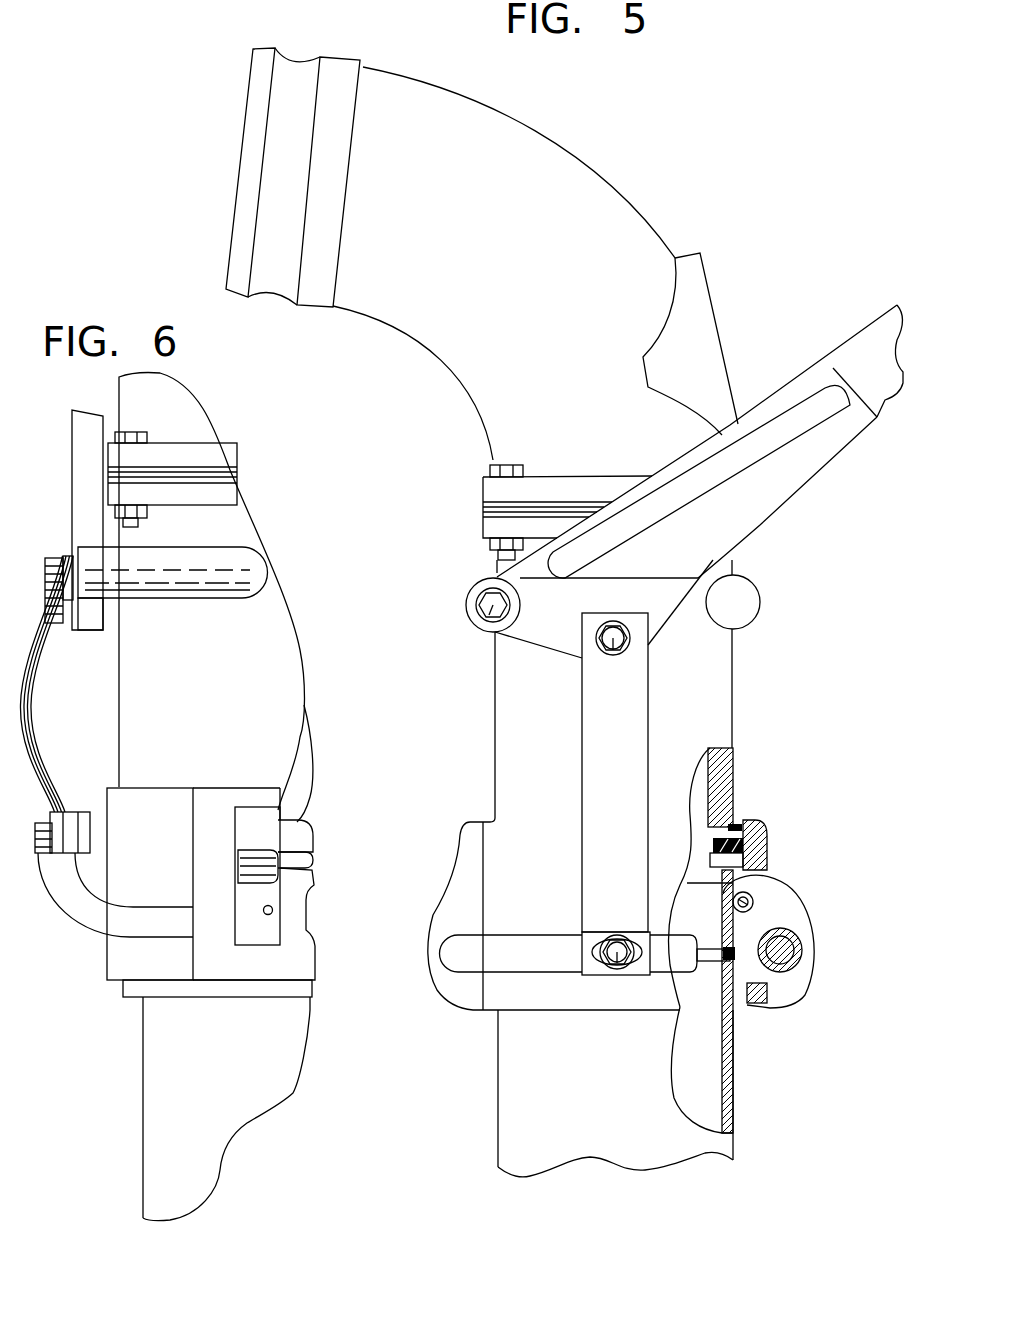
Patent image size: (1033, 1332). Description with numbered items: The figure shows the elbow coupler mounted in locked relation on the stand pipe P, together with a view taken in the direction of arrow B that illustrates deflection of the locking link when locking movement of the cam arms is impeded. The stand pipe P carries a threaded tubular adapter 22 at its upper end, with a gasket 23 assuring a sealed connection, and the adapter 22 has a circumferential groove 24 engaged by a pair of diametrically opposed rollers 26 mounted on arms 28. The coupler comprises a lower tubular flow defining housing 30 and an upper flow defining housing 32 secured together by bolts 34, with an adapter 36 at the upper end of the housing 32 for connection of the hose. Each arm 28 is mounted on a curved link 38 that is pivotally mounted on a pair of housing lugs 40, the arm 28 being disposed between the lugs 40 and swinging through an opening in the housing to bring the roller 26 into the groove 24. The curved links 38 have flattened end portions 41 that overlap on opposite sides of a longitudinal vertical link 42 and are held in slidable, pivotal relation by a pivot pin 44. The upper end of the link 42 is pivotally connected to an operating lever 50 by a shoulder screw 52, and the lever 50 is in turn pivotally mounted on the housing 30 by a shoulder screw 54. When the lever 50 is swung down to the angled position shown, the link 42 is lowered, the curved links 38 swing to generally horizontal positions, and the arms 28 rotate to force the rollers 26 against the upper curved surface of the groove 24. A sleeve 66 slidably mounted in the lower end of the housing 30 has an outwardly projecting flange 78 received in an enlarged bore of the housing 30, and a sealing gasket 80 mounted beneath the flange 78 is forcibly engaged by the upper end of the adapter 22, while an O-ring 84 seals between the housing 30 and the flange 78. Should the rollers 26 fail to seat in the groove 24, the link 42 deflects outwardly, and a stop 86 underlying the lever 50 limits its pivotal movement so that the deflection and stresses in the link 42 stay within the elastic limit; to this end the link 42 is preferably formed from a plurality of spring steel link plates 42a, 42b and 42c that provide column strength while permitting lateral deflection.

In FIG. 5, the adapter 36 is at (345, 63).
In FIG. 5, the upper flow defining housing 32 is at (632, 205).
In FIG. 5, the bolts 34 is at (520, 467).
In FIG. 6, the bolts 34 is at (162, 441).
In FIG. 5, the operating lever 50 is at (857, 337).
In FIG. 6, the operating lever 50 is at (103, 417).
In FIG. 5, the shoulder screw 54 is at (480, 627).
In FIG. 6, the shoulder screw 54 is at (60, 541).
In FIG. 5, the shoulder screw 52 is at (603, 654).
In FIG. 6, the shoulder screw 52 is at (47, 557).
In FIG. 5, the link 42 is at (627, 692).
In FIG. 6, the link 42 is at (84, 652).
In FIG. 6, the link plate 42a is at (53, 666).
In FIG. 6, the link plate 42b is at (33, 707).
In FIG. 6, the link plate 42c is at (39, 740).
In FIG. 5, the stop 86 is at (760, 596).
In FIG. 6, the stop 86 is at (167, 547).
In FIG. 5, the lower flow defining housing 30 is at (727, 753).
In FIG. 6, the lower flow defining housing 30 is at (247, 663).
In FIG. 5, the O-ring 84 is at (742, 823).
In FIG. 5, the flange 78 is at (767, 838).
In FIG. 6, the flange 78 is at (290, 824).
In FIG. 5, the sealing gasket 80 is at (713, 845).
In FIG. 6, the sealing gasket 80 is at (309, 842).
In FIG. 5, the rollers 26 is at (755, 894).
In FIG. 6, the rollers 26 is at (272, 867).
In FIG. 5, the arms 28 is at (787, 913).
In FIG. 6, the arms 28 is at (250, 888).
In FIG. 5, the housing lugs 40 is at (810, 940).
In FIG. 6, the housing lugs 40 is at (193, 840).
In FIG. 5, the flattened end portions 41 is at (583, 932).
In FIG. 6, the flattened end portions 41 is at (64, 808).
In FIG. 5, the pivot pin 44 is at (618, 947).
In FIG. 6, the pivot pin 44 is at (55, 855).
In FIG. 5, the gasket 23 is at (725, 952).
In FIG. 5, the curved link 38 is at (547, 972).
In FIG. 6, the curved link 38 is at (176, 940).
In FIG. 5, the tubular adapter 22 is at (748, 1008).
In FIG. 6, the sleeve 66 is at (303, 765).
In FIG. 6, the circumferential groove 24 is at (305, 885).
In FIG. 5, the stand pipe P is at (520, 1102).
In FIG. 6, the stand pipe P is at (187, 1074).
In FIG. 5, the arrow B is at (762, 674).